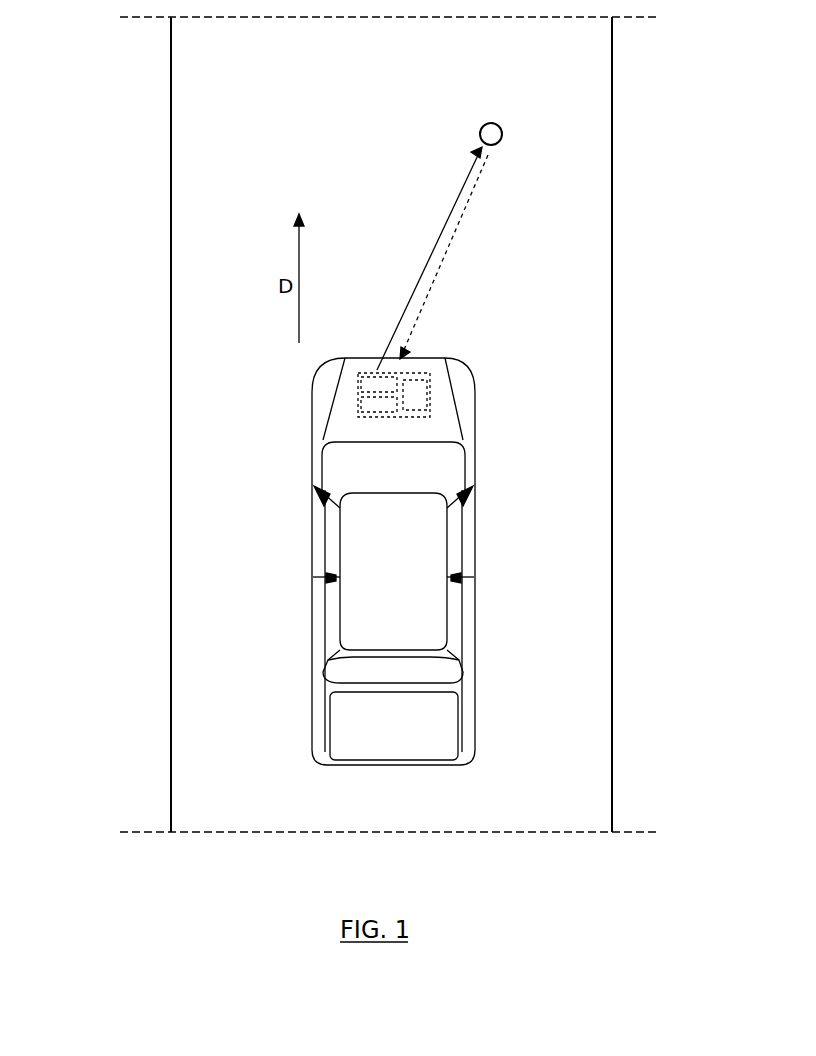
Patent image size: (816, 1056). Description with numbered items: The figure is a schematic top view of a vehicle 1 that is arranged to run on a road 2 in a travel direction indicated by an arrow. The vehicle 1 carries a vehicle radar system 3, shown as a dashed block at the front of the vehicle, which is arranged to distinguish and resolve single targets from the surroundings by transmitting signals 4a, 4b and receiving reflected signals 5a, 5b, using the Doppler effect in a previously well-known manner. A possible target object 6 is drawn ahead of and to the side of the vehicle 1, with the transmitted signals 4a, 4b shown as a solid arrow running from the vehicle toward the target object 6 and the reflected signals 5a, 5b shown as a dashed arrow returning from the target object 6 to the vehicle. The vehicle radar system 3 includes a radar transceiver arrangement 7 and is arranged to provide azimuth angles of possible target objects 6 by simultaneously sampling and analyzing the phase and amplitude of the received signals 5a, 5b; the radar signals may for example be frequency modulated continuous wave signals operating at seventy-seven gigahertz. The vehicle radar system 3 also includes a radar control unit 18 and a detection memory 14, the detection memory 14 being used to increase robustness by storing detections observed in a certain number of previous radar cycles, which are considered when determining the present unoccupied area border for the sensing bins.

The vehicle 1 is at (403, 554).
The road 2 is at (230, 583).
The vehicle radar system 3 is at (360, 378).
The transmitted signal 4a is at (259, 258).
The transmitted signal 4b is at (432, 250).
The reflected signal 5a is at (550, 257).
The reflected signal 5b is at (460, 225).
The target object 6 is at (510, 124).
The radar transceiver arrangement 7 is at (358, 396).
The detection memory 14 is at (432, 396).
The radar control unit 18 is at (358, 415).